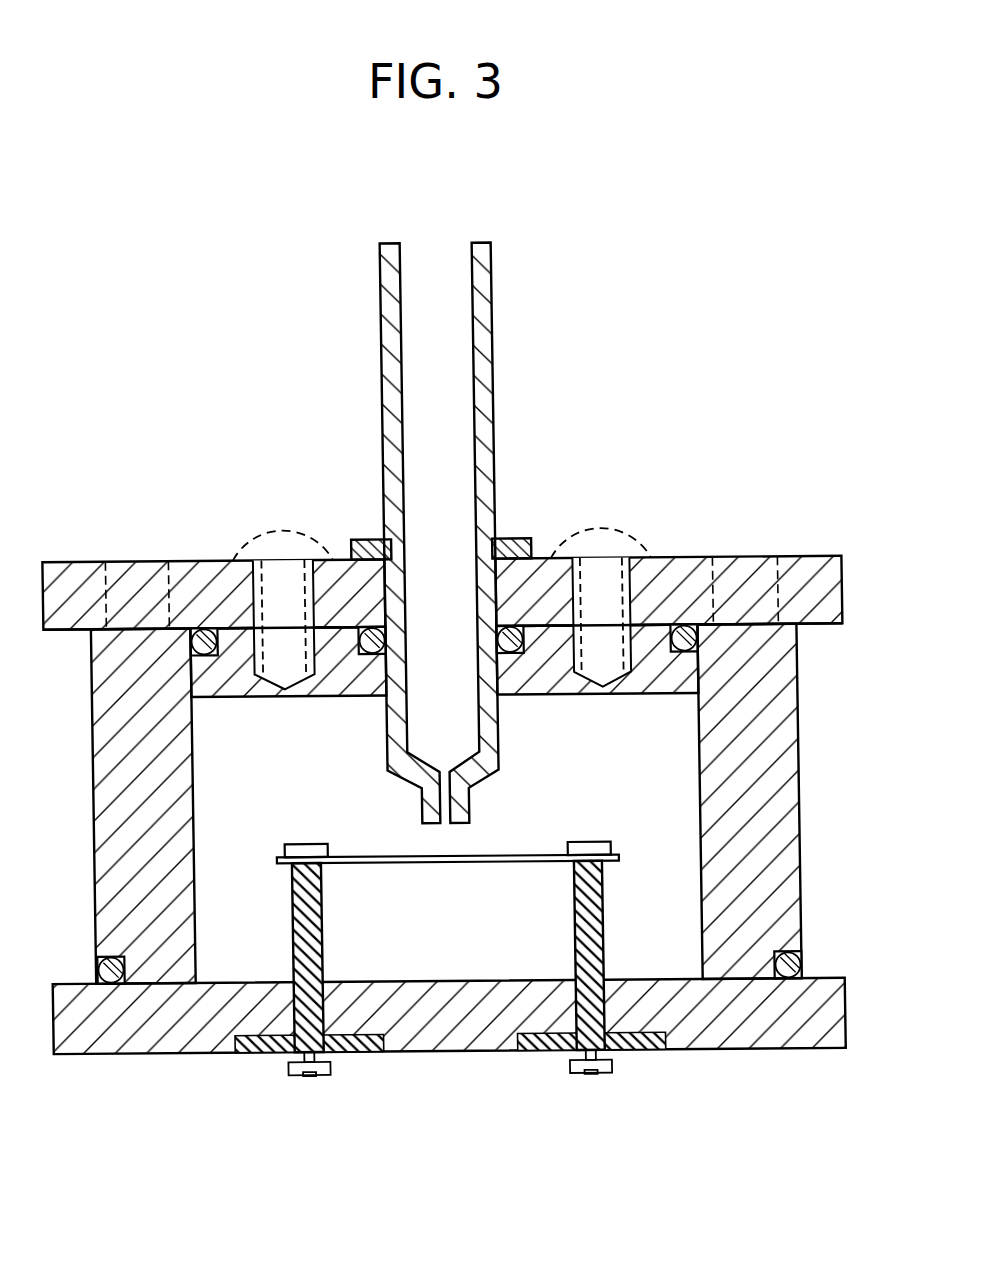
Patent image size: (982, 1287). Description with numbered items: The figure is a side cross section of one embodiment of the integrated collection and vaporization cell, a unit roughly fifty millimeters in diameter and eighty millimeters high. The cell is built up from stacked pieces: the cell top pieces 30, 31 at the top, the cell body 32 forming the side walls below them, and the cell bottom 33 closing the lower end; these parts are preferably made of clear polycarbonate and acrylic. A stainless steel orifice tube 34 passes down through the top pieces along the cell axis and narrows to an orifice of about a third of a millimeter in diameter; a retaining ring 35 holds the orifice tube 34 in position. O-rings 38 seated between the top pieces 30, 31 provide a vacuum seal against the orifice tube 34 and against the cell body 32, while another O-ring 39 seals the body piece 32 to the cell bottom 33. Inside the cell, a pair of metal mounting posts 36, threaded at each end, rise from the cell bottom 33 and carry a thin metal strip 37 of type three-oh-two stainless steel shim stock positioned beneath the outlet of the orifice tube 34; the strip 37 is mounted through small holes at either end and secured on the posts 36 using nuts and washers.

The cell top piece 30 is at (815, 559).
The cell top piece 31 is at (701, 675).
The cell body 32 is at (799, 789).
The cell bottom 33 is at (841, 1022).
The orifice tube 34 is at (489, 413).
The retaining ring 35 is at (522, 539).
The mounting post 36 is at (297, 1051).
The metal strip 37 is at (419, 856).
The O-ring 38 is at (680, 626).
The O-ring 39 is at (792, 954).